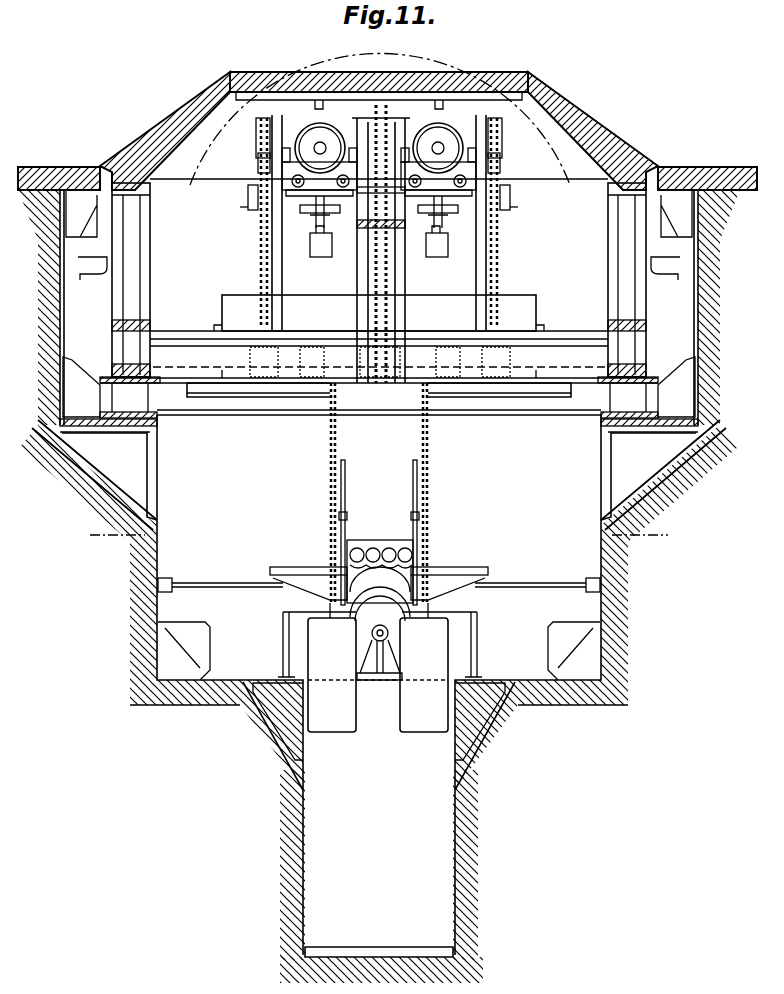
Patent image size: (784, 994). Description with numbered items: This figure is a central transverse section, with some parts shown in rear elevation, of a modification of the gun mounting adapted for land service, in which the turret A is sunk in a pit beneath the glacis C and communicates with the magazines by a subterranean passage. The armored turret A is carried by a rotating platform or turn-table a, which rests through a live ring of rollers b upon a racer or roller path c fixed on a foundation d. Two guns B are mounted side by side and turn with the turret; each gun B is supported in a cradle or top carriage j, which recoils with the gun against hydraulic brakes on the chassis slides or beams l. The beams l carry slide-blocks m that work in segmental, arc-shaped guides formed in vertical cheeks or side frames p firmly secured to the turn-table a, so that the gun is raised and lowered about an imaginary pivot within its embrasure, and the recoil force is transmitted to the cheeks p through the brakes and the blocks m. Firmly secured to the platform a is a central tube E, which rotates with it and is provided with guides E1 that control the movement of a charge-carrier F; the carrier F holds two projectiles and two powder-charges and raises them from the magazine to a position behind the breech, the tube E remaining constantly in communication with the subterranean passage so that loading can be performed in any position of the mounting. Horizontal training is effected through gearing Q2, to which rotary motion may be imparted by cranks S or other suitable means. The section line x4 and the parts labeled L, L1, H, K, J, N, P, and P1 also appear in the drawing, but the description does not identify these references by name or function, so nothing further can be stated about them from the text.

The turret A is at (379, 131).
The glacis C is at (387, 564).
The section line x4 is at (375, 535).
The rotating platform or turn-table a is at (378, 283).
The live ring of rollers b is at (379, 400).
The racer or roller path c is at (379, 434).
The foundation d is at (379, 476).
The platform L is at (352, 318).
The platform plate L1 is at (250, 352).
The girder H is at (380, 360).
The channel beam K is at (336, 406).
The central tube E is at (372, 494).
The guides E1 is at (346, 523).
The cranks S is at (379, 581).
The charge-carrier F is at (380, 580).
The gearing Q2 is at (379, 647).
The counterweight J is at (380, 667).
The guns B is at (379, 148).
The cradle or top carriage j is at (286, 160).
The slide-blocks m is at (382, 212).
The cheeks or side frames p is at (308, 250).
The chain N is at (375, 221).
The post bracket P is at (256, 120).
The post guide P1 is at (260, 162).
The chassis slides or beams l is at (257, 180).